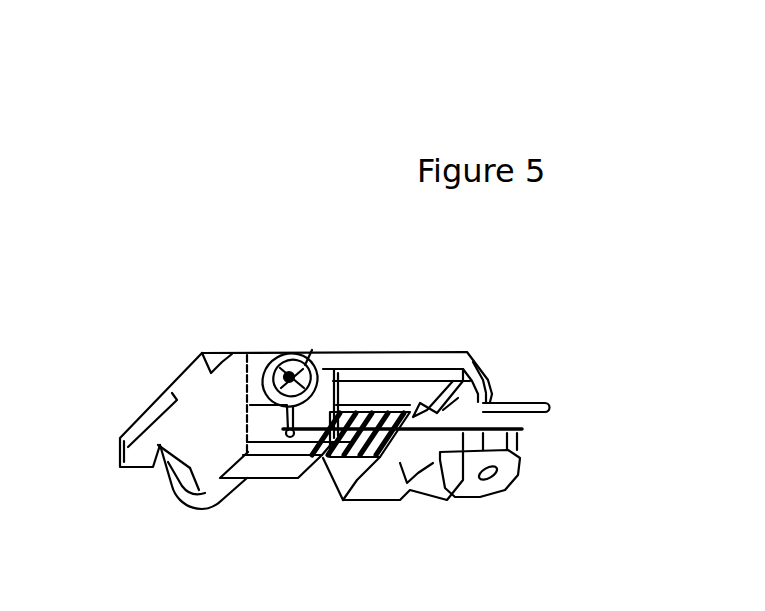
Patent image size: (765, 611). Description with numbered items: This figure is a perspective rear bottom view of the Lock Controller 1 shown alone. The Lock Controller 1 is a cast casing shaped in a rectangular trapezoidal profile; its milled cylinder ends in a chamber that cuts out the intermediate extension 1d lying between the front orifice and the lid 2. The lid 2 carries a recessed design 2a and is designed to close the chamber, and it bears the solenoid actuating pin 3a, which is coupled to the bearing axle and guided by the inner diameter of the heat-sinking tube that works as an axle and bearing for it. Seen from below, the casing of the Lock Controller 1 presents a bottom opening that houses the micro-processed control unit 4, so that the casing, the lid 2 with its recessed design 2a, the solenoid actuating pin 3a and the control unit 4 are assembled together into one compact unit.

The Lock Controller 1 is at (403, 351).
The intermediate extension 1d is at (182, 507).
The lid 2 is at (290, 425).
The recessed design 2a is at (312, 350).
The solenoid actuating pin 3a is at (264, 353).
The micro-processed control unit 4 is at (343, 440).